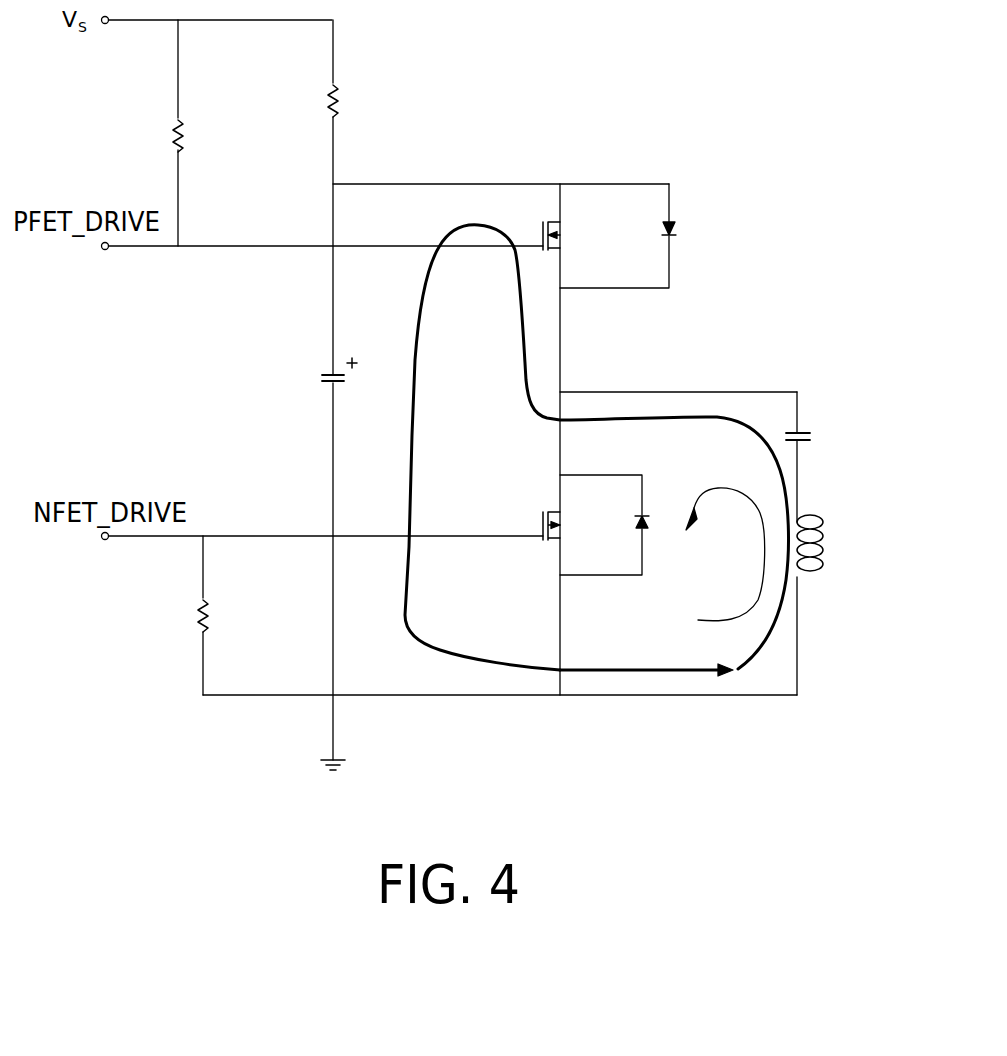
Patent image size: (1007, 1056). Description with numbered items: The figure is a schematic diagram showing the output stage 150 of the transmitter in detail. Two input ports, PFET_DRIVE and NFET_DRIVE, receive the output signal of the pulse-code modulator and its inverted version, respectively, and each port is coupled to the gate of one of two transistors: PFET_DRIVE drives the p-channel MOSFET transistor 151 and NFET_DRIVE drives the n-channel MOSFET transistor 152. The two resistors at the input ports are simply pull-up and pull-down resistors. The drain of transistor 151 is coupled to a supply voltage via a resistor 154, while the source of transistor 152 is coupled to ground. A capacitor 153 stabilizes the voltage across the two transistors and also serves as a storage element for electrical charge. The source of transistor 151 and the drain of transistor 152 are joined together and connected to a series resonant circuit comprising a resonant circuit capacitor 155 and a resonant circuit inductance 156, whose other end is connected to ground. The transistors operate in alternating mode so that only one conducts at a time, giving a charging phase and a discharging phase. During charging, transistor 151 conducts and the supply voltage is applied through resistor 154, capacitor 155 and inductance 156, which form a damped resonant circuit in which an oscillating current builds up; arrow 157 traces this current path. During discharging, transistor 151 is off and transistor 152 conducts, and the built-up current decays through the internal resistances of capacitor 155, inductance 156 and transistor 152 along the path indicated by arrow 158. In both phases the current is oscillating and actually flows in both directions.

The output stage 150 is at (730, 180).
The p-channel MOSFET transistor 151 is at (566, 232).
The n-channel MOSFET transistor 152 is at (565, 523).
The capacitor 153 is at (365, 371).
The resistor 154 is at (349, 96).
The resonant circuit capacitor 155 is at (816, 440).
The resonant circuit inductance 156 is at (826, 549).
The arrow 157 is at (414, 459).
The arrow 158 is at (706, 493).